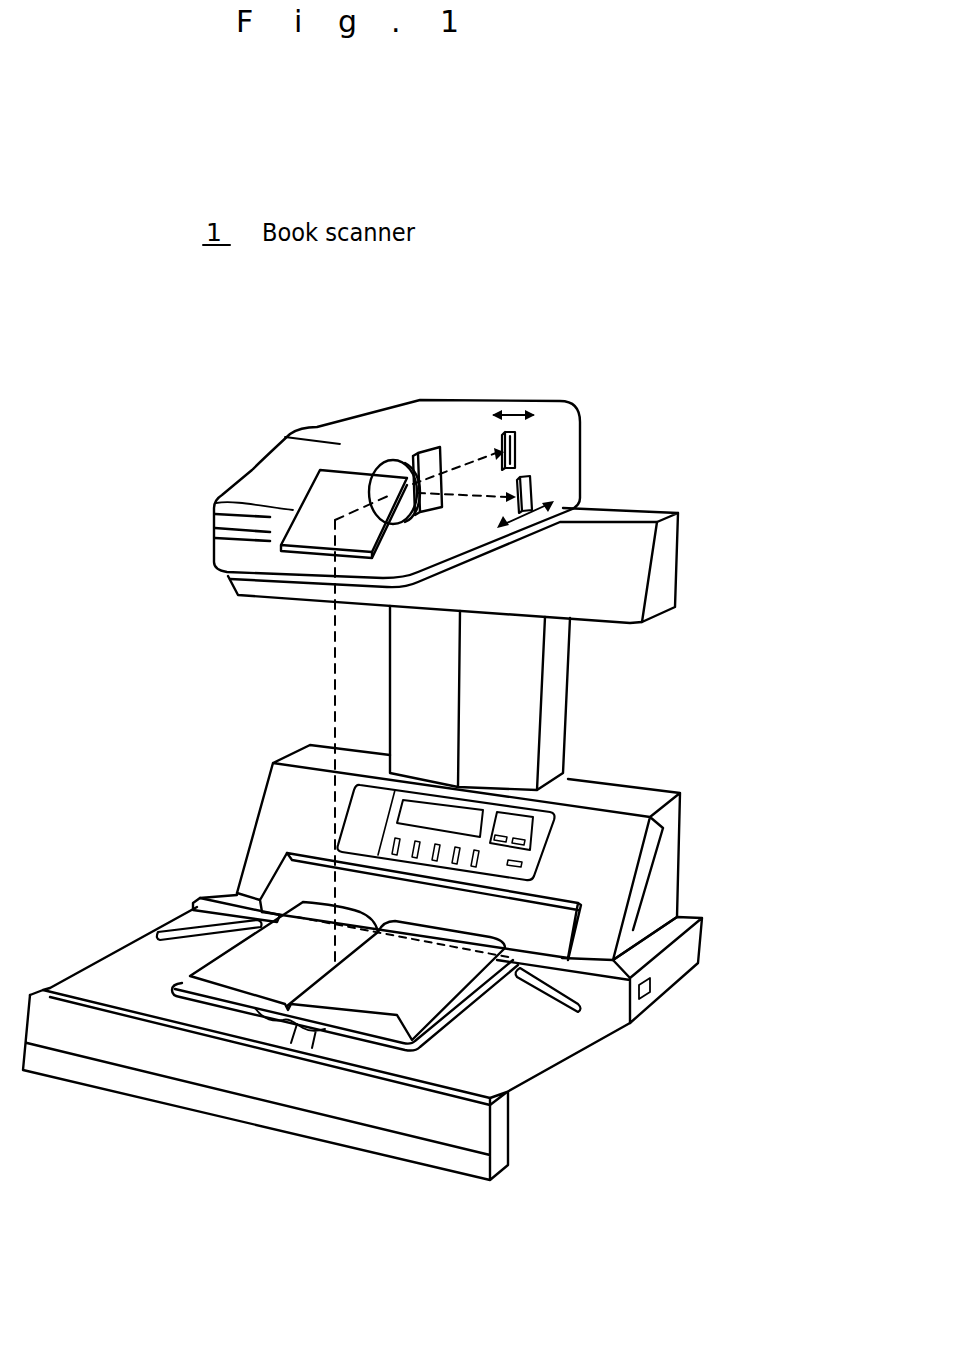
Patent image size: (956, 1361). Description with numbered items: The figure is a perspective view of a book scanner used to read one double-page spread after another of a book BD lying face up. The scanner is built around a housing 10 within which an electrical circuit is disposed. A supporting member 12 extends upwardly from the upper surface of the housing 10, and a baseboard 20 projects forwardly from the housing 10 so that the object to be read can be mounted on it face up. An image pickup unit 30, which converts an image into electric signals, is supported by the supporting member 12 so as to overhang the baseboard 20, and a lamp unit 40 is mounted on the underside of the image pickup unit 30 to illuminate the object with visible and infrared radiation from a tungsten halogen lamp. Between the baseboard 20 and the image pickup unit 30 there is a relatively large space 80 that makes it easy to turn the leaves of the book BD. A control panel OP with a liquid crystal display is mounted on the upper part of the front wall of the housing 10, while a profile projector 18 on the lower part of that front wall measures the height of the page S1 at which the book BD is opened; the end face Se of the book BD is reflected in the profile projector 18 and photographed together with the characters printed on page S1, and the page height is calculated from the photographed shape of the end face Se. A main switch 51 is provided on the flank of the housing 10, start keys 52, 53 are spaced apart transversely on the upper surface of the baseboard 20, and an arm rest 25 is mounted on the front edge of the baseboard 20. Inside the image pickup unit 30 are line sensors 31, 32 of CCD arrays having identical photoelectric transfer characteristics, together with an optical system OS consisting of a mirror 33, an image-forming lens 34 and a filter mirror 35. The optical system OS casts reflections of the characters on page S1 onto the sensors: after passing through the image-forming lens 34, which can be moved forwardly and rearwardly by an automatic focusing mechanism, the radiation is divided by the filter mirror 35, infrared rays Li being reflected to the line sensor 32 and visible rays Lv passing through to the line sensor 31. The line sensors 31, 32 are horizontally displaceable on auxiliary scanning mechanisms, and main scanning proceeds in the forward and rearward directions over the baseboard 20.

The housing 10 is at (668, 851).
The supporting member 12 is at (557, 673).
The profile projector 18 is at (280, 890).
The baseboard 20 is at (510, 1057).
The arm rest 25 is at (202, 1067).
The image pickup unit 30 is at (262, 465).
The line sensor 31 is at (522, 448).
The line sensor 32 is at (535, 488).
The mirror 33 is at (293, 510).
The image-forming lens 34 is at (385, 468).
The filter mirror 35 is at (436, 448).
The lamp unit 40 is at (664, 565).
The main switch 51 is at (650, 990).
The start key 52 is at (188, 935).
The start key 53 is at (586, 1012).
The space 80 is at (290, 688).
The optical system OS is at (393, 432).
The visible rays Lv is at (467, 460).
The infrared rays Li is at (473, 490).
The control panel OP is at (554, 830).
The end face Se is at (458, 947).
The page S1 is at (380, 994).
The book BD is at (317, 1040).